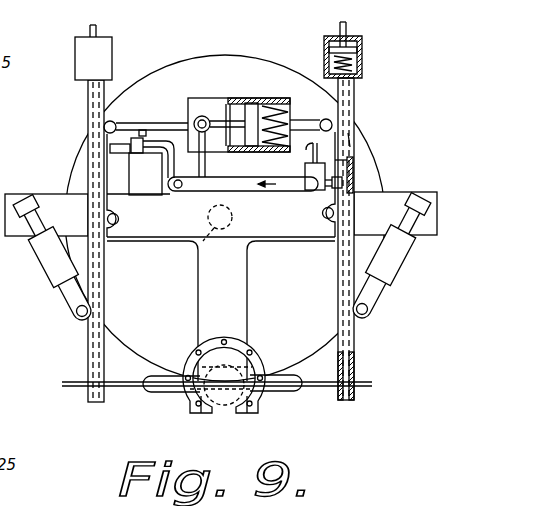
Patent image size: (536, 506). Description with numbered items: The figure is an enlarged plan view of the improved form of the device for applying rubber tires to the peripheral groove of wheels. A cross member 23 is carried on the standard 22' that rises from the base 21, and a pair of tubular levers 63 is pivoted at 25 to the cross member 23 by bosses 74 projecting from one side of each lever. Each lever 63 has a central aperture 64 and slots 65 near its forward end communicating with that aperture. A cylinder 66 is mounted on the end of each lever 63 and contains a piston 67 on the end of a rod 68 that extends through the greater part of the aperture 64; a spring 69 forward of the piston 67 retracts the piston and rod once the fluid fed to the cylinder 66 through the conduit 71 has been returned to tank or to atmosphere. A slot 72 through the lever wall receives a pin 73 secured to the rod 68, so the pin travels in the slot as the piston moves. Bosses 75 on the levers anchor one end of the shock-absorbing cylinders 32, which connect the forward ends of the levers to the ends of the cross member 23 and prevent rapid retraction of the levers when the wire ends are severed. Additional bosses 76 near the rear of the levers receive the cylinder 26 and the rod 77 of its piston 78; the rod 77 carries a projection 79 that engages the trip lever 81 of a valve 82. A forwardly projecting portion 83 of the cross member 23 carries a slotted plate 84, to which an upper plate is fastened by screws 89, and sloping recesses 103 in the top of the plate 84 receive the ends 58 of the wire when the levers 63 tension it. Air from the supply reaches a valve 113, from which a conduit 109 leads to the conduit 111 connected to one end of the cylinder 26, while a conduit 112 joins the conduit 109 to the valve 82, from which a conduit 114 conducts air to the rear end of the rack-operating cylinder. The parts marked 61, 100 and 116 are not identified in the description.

The base 21 is at (258, 42).
The passage 22' is at (200, 235).
The cross member 23 is at (45, 181).
The pivot 25 is at (112, 242).
The cylinder 26 is at (278, 99).
The cylinders 32 is at (47, 283).
The ends of the wire 58 is at (320, 373).
The lower wall 61 is at (259, 157).
The levers 63 is at (87, 100).
The central aperture 64 is at (345, 138).
The slots 65 is at (106, 382).
The cylinders 66 is at (112, 53).
The piston 67 is at (348, 44).
The rod 68 is at (356, 353).
The spring 69 is at (354, 58).
The conduit 71 is at (97, 30).
The slot 72 is at (346, 175).
The pin 73 is at (336, 164).
The bosses 74 is at (124, 219).
The bosses 75 is at (78, 322).
The bosses 76 is at (112, 121).
The rod 77 is at (157, 123).
The piston 78 is at (240, 99).
The projection 79 is at (141, 130).
The trip lever 81 is at (146, 144).
The valve 82 is at (140, 157).
The forwardly projecting portion 83 is at (240, 298).
The slotted plate 84 is at (252, 348).
The screws 89 is at (259, 358).
The pipe 100 is at (302, 147).
The sloping recesses 103 is at (265, 396).
The conduit 109 is at (233, 192).
The conduit 111 is at (206, 163).
The conduit 112 is at (171, 194).
The valve 113 is at (305, 171).
The conduit 114 is at (110, 151).
The valve 116 is at (327, 195).